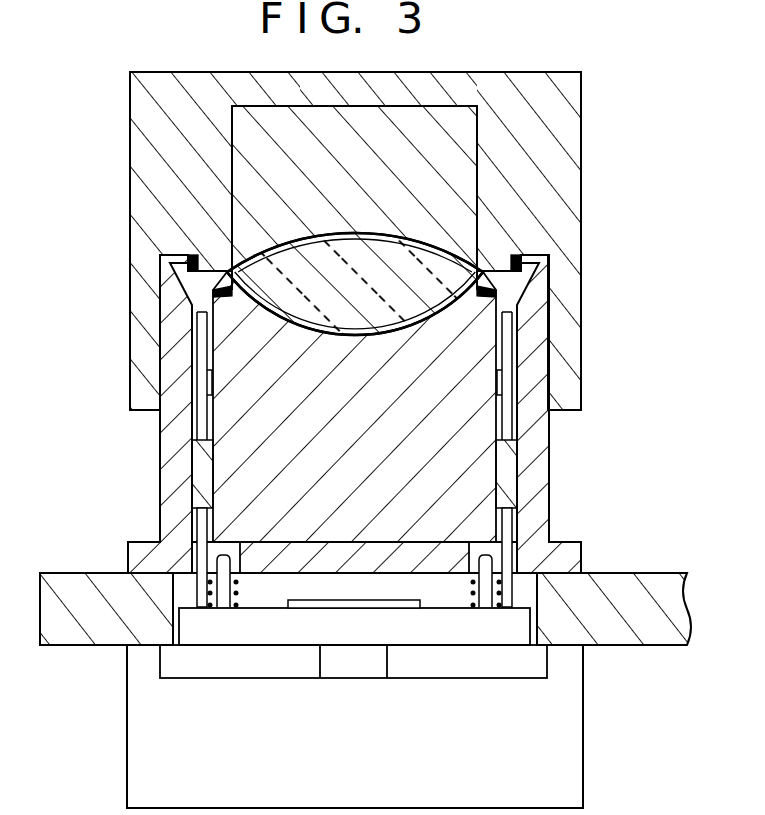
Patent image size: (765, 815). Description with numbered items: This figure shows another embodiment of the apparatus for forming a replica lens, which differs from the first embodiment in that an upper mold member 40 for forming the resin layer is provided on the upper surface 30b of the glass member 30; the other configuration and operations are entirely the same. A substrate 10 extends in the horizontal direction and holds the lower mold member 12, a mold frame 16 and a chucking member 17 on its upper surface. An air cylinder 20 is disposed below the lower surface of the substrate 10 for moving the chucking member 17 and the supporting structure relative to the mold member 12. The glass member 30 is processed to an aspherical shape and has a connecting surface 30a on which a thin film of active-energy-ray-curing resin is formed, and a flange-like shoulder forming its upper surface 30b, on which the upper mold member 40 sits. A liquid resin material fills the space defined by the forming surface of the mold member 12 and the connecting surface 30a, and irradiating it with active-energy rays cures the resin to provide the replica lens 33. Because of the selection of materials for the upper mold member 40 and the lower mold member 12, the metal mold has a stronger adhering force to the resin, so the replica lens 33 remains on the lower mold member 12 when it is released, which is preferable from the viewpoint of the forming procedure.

The substrate 10 is at (83, 585).
The mold member 12 is at (438, 422).
The mold frame 16 is at (540, 503).
The chucking member 17 is at (517, 470).
The air cylinder 20 is at (588, 750).
The glass member 30 is at (428, 273).
The connecting surface 30a is at (383, 336).
The upper surface of glass member 30b is at (370, 238).
The replica lens 33 is at (290, 234).
The upper mold member 40 is at (438, 178).